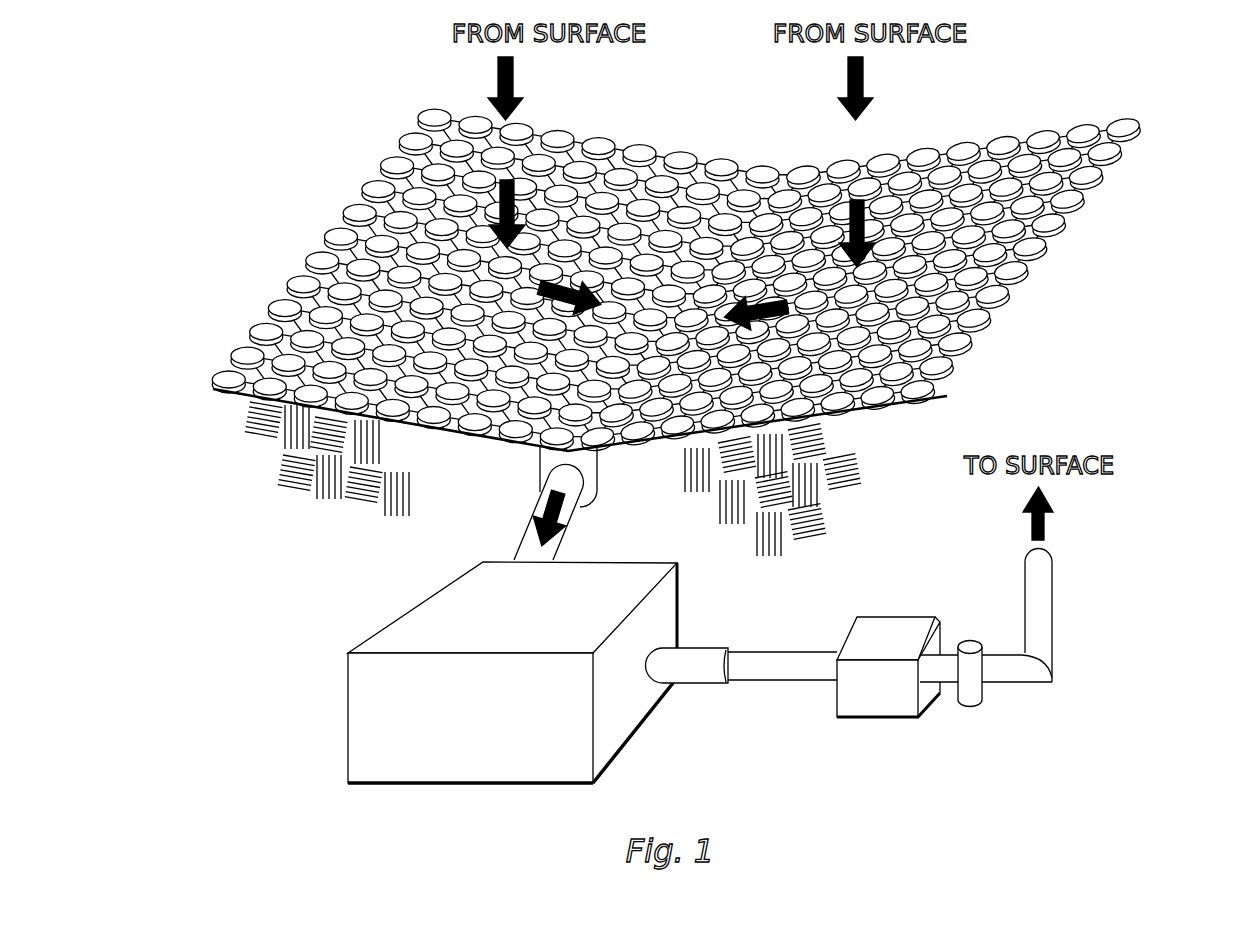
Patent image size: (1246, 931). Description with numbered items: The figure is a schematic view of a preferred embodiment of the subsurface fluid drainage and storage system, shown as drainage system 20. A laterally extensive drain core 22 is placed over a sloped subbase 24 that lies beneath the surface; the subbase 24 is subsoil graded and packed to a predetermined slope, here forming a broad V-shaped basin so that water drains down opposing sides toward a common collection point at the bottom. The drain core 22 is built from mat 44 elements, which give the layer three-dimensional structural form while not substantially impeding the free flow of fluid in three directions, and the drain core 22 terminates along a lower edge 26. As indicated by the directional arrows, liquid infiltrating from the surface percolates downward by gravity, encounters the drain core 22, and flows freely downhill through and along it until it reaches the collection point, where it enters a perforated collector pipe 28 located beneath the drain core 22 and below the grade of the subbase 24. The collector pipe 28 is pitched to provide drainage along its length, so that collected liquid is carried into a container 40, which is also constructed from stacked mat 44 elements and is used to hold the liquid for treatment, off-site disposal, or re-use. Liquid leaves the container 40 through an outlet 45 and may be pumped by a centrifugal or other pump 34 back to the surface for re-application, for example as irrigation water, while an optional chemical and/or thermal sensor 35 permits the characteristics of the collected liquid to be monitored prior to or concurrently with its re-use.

The drainage system 20 is at (424, 82).
The drain core 22 is at (372, 185).
The mat 44 is at (1082, 188).
The sheet edge 26 is at (873, 413).
The subbase 24 is at (285, 477).
The collector pipe 28 is at (565, 517).
The container 40 is at (365, 739).
The outlet 45 is at (687, 676).
The pump 34 is at (870, 703).
The sensor 35 is at (973, 694).